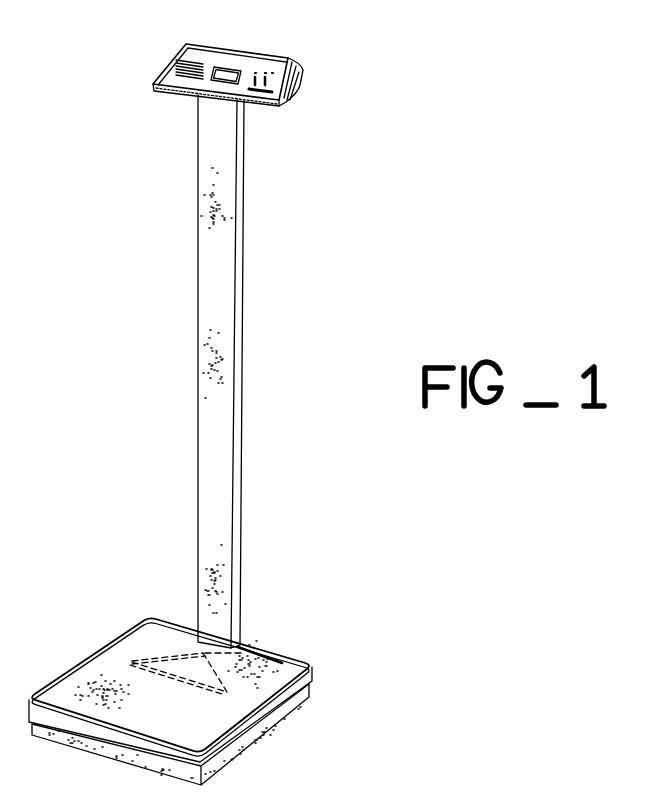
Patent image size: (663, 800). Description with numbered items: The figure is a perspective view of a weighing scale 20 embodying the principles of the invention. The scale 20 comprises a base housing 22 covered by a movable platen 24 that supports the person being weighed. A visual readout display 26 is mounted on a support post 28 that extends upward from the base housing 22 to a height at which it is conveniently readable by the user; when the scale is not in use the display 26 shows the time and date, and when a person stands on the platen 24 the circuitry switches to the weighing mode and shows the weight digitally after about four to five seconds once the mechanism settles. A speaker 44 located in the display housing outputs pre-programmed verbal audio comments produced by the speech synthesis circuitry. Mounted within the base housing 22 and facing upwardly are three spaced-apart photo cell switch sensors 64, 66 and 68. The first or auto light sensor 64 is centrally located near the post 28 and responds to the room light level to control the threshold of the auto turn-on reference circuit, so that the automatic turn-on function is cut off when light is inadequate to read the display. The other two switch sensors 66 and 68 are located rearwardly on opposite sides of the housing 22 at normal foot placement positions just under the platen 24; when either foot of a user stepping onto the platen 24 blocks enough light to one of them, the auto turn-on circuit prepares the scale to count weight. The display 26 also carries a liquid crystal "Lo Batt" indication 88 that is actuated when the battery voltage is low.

The scale 20 is at (287, 371).
The base housing 22 is at (205, 676).
The movable platen 24 is at (205, 665).
The visual readout display 26 is at (231, 72).
The support post 28 is at (225, 215).
The speaker 44 is at (224, 75).
The auto light sensor 64 is at (246, 654).
The photo cell switch sensor 66 is at (132, 660).
The photo cell switch sensor 68 is at (285, 662).
The "Lo Batt" indication 88 is at (273, 84).